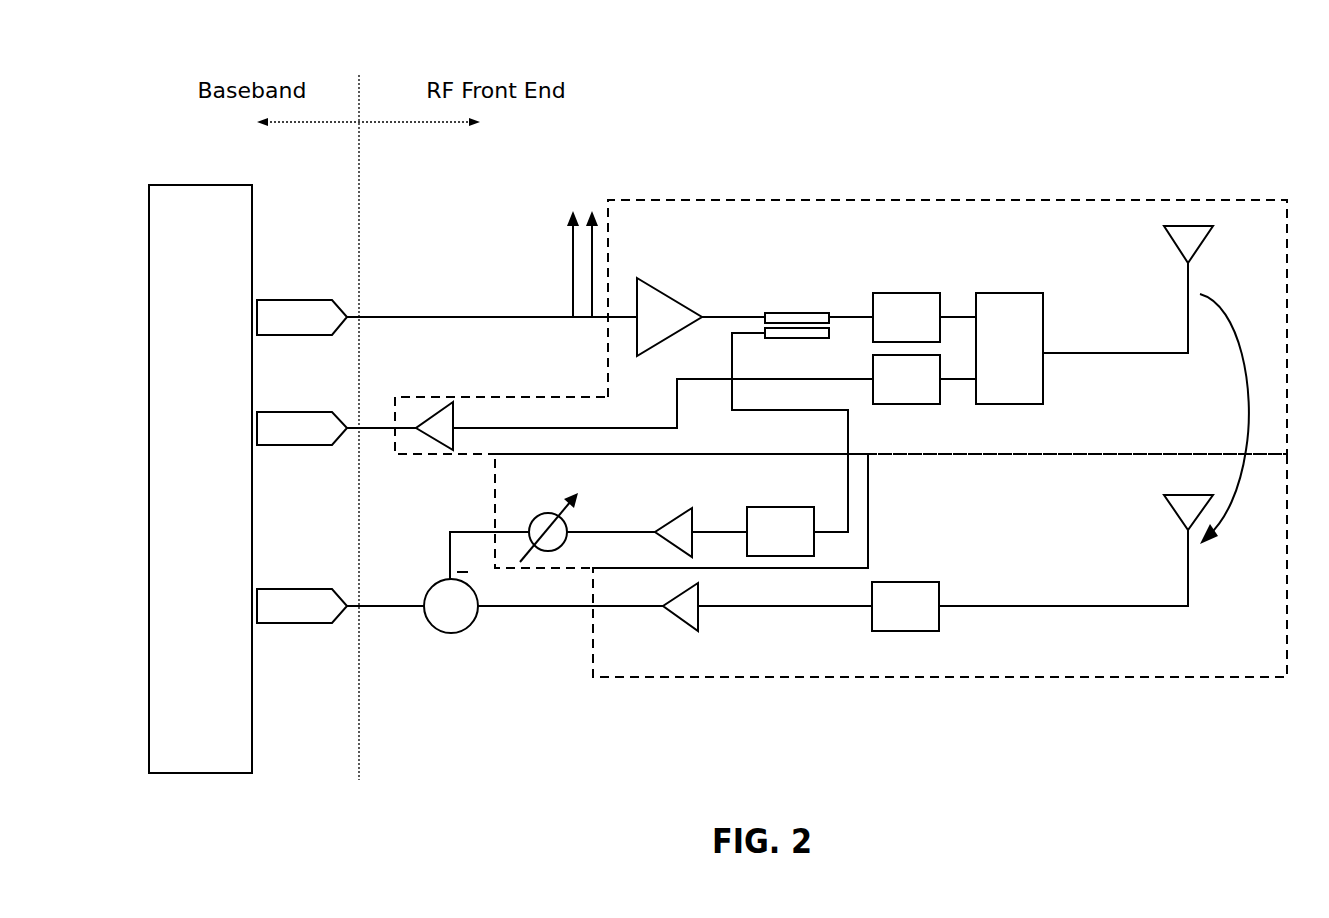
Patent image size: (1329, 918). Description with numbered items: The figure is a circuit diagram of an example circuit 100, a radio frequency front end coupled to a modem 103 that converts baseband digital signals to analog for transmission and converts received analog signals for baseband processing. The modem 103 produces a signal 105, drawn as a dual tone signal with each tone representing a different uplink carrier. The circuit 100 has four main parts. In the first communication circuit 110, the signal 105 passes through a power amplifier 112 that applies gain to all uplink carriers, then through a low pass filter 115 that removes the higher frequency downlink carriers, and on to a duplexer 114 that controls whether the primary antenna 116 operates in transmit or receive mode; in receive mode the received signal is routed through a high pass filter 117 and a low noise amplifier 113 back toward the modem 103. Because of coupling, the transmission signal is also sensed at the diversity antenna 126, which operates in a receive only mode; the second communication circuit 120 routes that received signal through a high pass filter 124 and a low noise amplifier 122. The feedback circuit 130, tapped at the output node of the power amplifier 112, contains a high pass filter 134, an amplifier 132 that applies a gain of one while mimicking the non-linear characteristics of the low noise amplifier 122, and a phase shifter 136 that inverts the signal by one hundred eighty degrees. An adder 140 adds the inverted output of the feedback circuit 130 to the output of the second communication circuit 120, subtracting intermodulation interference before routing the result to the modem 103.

The circuit 100 is at (781, 37).
The modem 103 is at (200, 185).
The signal 105 is at (583, 211).
The first communication circuit 110 is at (951, 200).
The power amplifier 112 is at (672, 297).
The low noise amplifier 113 is at (432, 412).
The duplexer 114 is at (1005, 293).
The low pass filter 115 is at (910, 293).
The primary antenna 116 is at (1170, 243).
The high pass filter 117 is at (909, 404).
The second communication circuit 120 is at (1152, 680).
The low noise amplifier 122 is at (672, 631).
The high pass filter 124 is at (912, 582).
The diversity antenna 126 is at (1170, 511).
The feedback circuit 130 is at (552, 569).
The amplifier 132 is at (672, 521).
The high pass filter 134 is at (782, 507).
The phase shifter 136 is at (537, 515).
The adder 140 is at (455, 636).